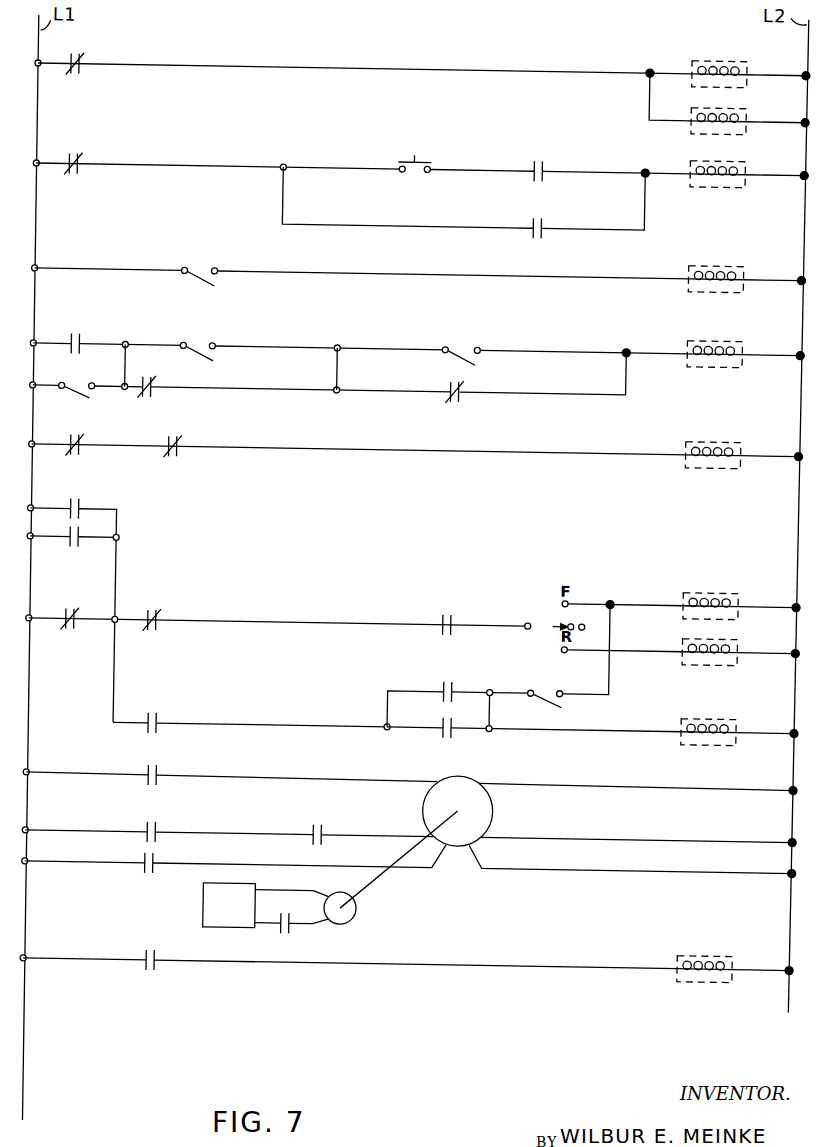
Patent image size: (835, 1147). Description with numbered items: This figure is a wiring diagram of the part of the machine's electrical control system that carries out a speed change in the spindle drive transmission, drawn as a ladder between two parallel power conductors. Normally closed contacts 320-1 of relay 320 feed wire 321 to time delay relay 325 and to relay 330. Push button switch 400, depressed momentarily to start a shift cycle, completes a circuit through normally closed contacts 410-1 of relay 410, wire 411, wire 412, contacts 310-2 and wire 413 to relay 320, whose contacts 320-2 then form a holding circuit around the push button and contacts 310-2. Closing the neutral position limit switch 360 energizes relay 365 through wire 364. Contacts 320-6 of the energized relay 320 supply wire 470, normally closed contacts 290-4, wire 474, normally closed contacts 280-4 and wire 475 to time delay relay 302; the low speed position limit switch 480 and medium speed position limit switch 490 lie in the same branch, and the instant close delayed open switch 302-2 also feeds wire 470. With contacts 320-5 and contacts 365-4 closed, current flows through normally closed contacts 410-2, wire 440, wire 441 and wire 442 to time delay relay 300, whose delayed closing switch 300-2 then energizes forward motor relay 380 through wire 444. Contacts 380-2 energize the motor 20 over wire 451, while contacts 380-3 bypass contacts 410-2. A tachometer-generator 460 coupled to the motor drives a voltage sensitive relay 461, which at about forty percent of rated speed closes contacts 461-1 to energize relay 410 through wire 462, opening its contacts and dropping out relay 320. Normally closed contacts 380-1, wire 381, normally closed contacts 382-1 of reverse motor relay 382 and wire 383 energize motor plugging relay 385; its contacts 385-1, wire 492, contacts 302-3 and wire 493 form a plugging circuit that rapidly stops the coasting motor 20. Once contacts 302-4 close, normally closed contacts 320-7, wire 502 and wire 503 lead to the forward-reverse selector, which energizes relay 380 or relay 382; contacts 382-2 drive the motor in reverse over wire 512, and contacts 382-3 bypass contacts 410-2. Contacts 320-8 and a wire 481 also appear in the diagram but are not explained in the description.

The motor 20 is at (506, 805).
The normally closed contacts of relay 280 280-4 is at (470, 378).
The normally closed contacts of relay 290 290-4 is at (162, 396).
The time delay relay 300 is at (727, 718).
The instant open delayed closing switch 300-2 is at (560, 676).
The time delay relay 302 is at (727, 340).
The instant close delayed open switch 302-2 is at (78, 400).
The contacts of relay 302 302-3 is at (358, 810).
The contacts of relay 302 302-4 is at (458, 606).
The normally open contacts of relay 310 310-2 is at (544, 156).
The relay 320 is at (729, 160).
The normally closed contacts of relay 320 320-1 is at (80, 56).
The contacts of relay 320 320-2 is at (556, 212).
The contacts of relay 320 320-5 is at (168, 712).
The normally open contacts of relay 320 320-6 is at (82, 334).
The normally closed contacts of relay 320 320-7 is at (166, 606).
The normally open contact 320-8 is at (292, 916).
The wire 321 is at (262, 63).
The time delay relay 325 is at (730, 60).
The relay 330 is at (729, 108).
The neutral position limit switch 360 is at (198, 264).
The wire 364 is at (378, 268).
The relay 365 is at (729, 264).
The contacts of relay 365 365-4 is at (476, 710).
The forward motor relay 380 is at (725, 592).
The normally closed contacts of forward motor relay 380 380-1 is at (88, 436).
The contacts of relay 380 380-2 is at (166, 764).
The contacts of relay 380 380-3 is at (84, 500).
The wire 381 is at (150, 444).
The reverse motor relay 382 is at (725, 638).
The normally closed contacts of reverse motor relay 382 382-1 is at (188, 434).
The contacts of relay 382 382-2 is at (168, 852).
The contacts of relay 382 382-3 is at (108, 522).
The wire 383 is at (504, 444).
The motor plugging relay 385 is at (727, 441).
The contacts of relay 385 385-1 is at (186, 812).
The push button switch 400 is at (410, 156).
The relay 410 is at (727, 955).
The normally closed contacts of relay 410 410-1 is at (80, 156).
The normally closed contacts of relay 410 410-2 is at (98, 585).
The wire 411 is at (275, 163).
The wire 412 is at (498, 163).
The wire 413 is at (648, 158).
The wire 440 is at (124, 650).
The wire 441 is at (318, 721).
The wire 442 is at (624, 721).
The wire 444 is at (619, 608).
The wire 451 is at (310, 774).
The electrical tachometer-generator 460 is at (368, 914).
The voltage sensitive relay 461 is at (266, 906).
The contacts of voltage sensitive relay 461 461-1 is at (164, 950).
The wire 462 is at (452, 958).
The wire 470 is at (180, 340).
The wire 474 is at (301, 376).
The wire 475 is at (631, 366).
The low speed position limit switch 480 is at (220, 340).
The conductor line 481 is at (302, 343).
The medium speed position limit switch 490 is at (472, 340).
The wire 492 is at (278, 830).
The wire 493 is at (392, 836).
The wire 502 is at (336, 618).
The wire 503 is at (534, 618).
The wire 512 is at (332, 864).